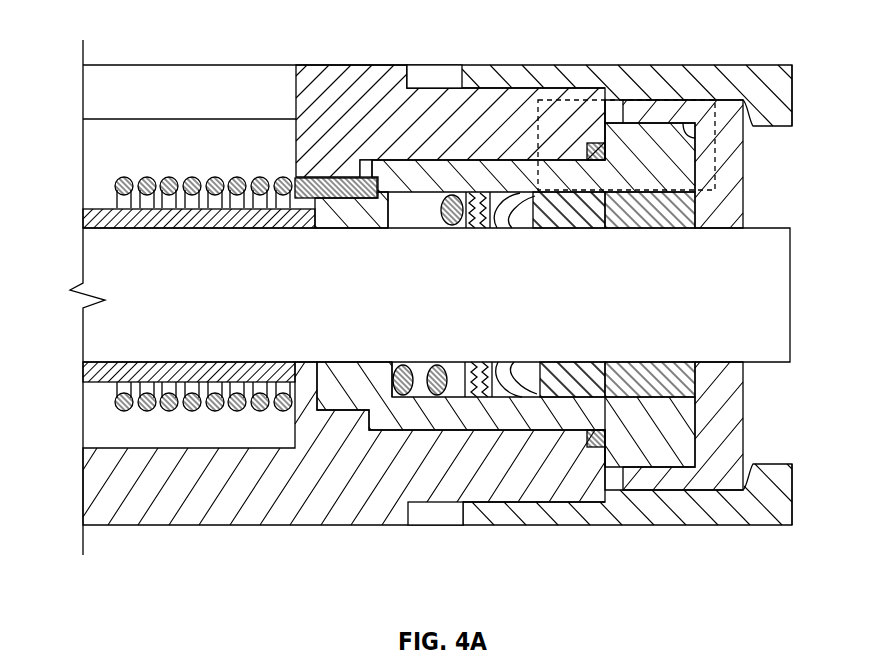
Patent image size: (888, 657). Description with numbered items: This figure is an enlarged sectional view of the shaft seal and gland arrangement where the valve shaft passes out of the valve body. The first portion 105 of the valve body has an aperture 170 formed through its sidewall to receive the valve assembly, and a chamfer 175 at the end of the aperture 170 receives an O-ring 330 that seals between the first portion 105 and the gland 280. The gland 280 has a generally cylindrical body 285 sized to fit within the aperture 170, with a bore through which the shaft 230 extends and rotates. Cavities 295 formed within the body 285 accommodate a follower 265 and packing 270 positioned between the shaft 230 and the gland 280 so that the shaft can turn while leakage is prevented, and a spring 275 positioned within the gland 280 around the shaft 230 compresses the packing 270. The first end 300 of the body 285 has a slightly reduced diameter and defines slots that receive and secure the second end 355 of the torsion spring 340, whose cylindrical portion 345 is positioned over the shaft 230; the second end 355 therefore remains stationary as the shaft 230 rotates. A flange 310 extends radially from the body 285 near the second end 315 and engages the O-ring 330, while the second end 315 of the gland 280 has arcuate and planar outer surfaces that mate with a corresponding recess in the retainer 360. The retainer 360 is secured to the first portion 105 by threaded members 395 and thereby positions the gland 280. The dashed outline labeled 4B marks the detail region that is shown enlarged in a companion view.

The first portion 105 is at (352, 80).
The aperture 170 is at (408, 437).
The chamfer 175 is at (580, 438).
The shaft 230 is at (797, 342).
The follower 265 is at (662, 382).
The packing 270 is at (625, 430).
The spring 275 is at (404, 367).
The gland 280 is at (450, 176).
The body 285 is at (533, 208).
The cavities 295 is at (412, 217).
The first end 300 is at (345, 417).
The flange 310 is at (618, 110).
The second end 315 is at (664, 110).
The O-ring 330 is at (594, 405).
The torsion spring 340 is at (172, 182).
The cylindrical portion 345 is at (170, 408).
The second end 355 is at (334, 194).
The retainer 360 is at (733, 420).
The threaded members 395 is at (783, 99).
The detail view region 4B is at (716, 166).